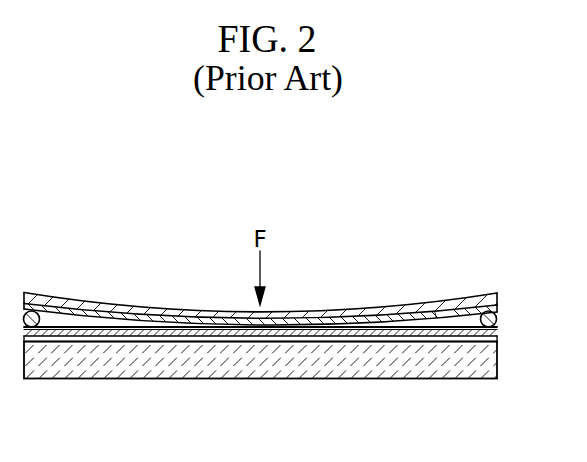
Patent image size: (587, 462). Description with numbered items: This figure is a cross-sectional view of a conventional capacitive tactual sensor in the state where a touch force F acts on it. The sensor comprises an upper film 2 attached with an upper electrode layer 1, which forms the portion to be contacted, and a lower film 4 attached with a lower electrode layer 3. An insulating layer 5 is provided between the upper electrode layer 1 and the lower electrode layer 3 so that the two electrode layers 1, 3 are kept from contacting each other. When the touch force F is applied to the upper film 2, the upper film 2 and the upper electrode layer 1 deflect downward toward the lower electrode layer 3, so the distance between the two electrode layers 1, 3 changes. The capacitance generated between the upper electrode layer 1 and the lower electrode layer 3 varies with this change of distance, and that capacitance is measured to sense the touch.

The upper electrode layer 1 is at (385, 314).
The upper film 2 is at (156, 308).
The lower electrode layer 3 is at (232, 338).
The lower film 4 is at (178, 365).
The insulating layer 5 is at (296, 331).